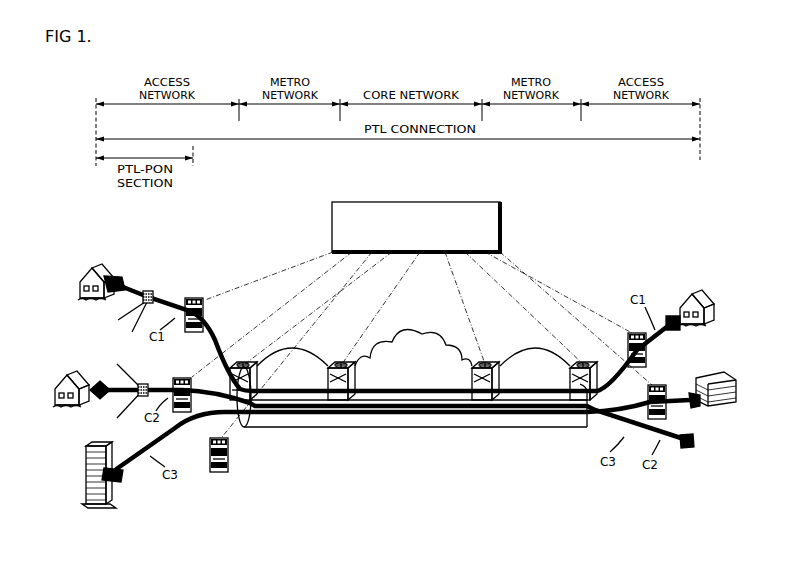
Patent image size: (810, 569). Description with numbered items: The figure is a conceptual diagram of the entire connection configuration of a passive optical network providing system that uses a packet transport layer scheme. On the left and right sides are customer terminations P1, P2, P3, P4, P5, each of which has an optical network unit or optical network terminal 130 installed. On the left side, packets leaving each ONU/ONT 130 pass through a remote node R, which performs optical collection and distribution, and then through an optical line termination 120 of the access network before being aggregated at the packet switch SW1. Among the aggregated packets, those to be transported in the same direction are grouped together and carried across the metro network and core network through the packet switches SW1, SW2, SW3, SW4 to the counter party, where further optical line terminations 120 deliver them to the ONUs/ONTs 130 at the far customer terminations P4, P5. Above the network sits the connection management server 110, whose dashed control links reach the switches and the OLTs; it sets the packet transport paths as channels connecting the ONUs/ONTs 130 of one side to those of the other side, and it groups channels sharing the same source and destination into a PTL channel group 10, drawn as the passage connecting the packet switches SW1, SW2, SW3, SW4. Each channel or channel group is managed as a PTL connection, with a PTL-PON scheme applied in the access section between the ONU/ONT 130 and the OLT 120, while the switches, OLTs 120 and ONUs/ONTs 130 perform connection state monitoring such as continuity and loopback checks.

The PTL channel group 10 is at (455, 428).
The connection management server 110 is at (478, 197).
The optical line termination 120 is at (198, 297).
The optical network unit/optical network terminal 130 is at (120, 278).
The remote node R is at (152, 290).
The packet switch SW1 is at (246, 363).
The packet switch SW2 is at (342, 363).
The packet switch SW3 is at (486, 363).
The packet switch SW4 is at (570, 378).
The customer termination P1 is at (96, 262).
The customer termination P2 is at (68, 371).
The customer termination P3 is at (84, 451).
The customer termination P4 is at (698, 290).
The customer termination P5 is at (712, 374).